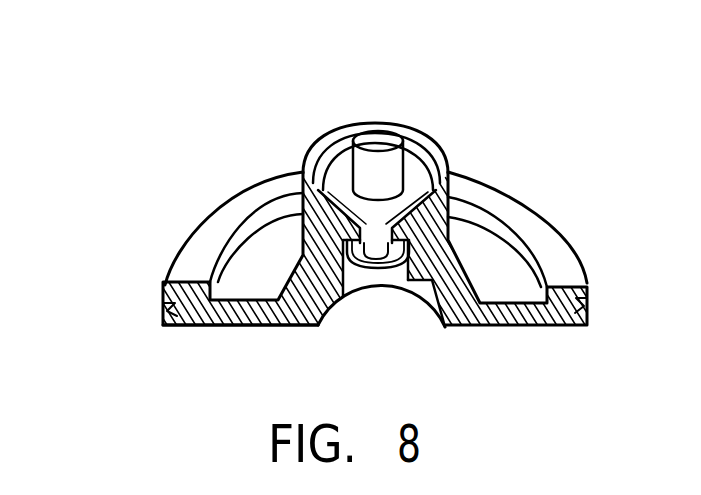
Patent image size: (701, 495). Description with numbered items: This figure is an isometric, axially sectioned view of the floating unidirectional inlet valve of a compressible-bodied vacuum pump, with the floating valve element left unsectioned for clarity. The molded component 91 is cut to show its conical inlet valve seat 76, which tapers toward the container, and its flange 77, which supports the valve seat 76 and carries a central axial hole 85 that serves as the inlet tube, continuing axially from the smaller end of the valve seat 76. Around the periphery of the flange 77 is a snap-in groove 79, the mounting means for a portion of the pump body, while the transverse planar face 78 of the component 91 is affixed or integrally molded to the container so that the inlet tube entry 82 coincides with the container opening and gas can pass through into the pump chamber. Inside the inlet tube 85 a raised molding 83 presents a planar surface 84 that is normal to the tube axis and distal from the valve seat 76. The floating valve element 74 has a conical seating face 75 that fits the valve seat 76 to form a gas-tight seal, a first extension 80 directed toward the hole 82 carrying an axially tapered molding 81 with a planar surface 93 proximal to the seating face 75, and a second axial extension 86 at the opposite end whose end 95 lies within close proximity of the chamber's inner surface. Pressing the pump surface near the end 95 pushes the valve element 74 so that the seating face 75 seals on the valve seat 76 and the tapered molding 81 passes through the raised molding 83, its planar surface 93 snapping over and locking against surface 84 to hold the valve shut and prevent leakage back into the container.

The floating valve element 74 is at (433, 147).
The conical seating face 75 is at (323, 152).
The inlet valve seat 76 is at (448, 238).
The flange 77 is at (180, 268).
The transverse planar face 78 is at (243, 328).
The snap-in groove 79 is at (163, 303).
The first extension 80 is at (393, 292).
The axially tapered molding 81 is at (380, 290).
The inlet tube entry 82 is at (342, 315).
The raised molding 83 is at (410, 293).
The planar surface 84 is at (362, 292).
The central axial hole 85 is at (330, 258).
The second axial extension 86 is at (420, 141).
The component 91 is at (550, 333).
The planar surface 93 is at (290, 272).
The end 95 is at (378, 140).